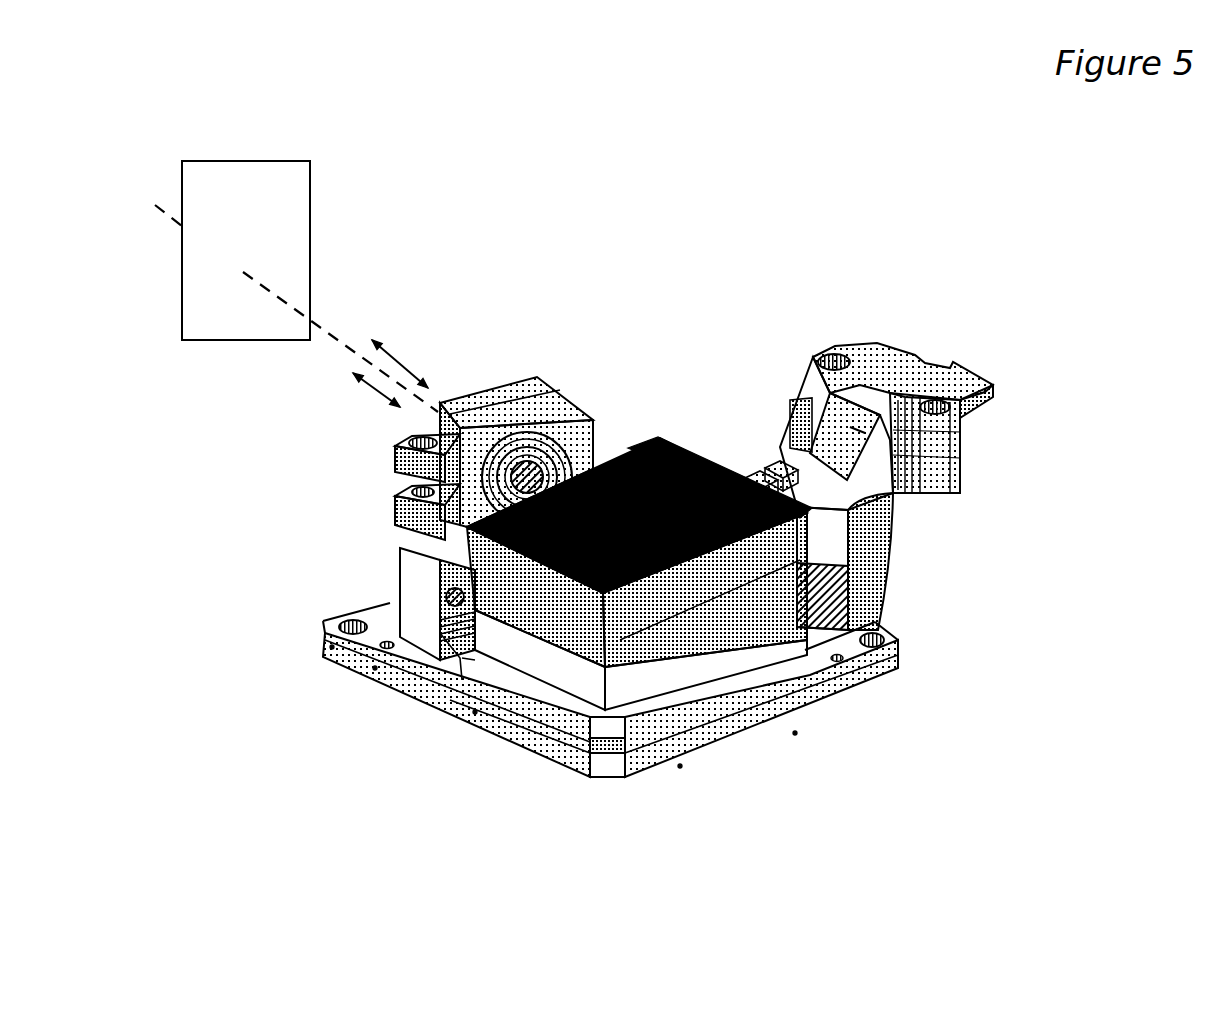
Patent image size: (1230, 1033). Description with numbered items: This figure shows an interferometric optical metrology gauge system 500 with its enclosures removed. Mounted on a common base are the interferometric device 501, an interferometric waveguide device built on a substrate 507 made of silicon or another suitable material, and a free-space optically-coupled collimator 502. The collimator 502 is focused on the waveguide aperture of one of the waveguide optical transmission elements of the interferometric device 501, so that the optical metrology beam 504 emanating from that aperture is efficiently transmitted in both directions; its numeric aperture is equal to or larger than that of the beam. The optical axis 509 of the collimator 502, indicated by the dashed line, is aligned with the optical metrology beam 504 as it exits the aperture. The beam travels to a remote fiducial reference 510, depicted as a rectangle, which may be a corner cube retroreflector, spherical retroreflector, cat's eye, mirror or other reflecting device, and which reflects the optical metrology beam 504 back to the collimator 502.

The interferometric optical metrology gauge system 500 is at (1008, 639).
The interferometric device 501 is at (703, 430).
The free-space optically-coupled collimator 502 is at (608, 412).
The optical metrology beam 504 is at (407, 362).
The substrate 507 is at (560, 573).
The optical axis 509 is at (327, 337).
The remote fiducial reference 510 is at (268, 170).